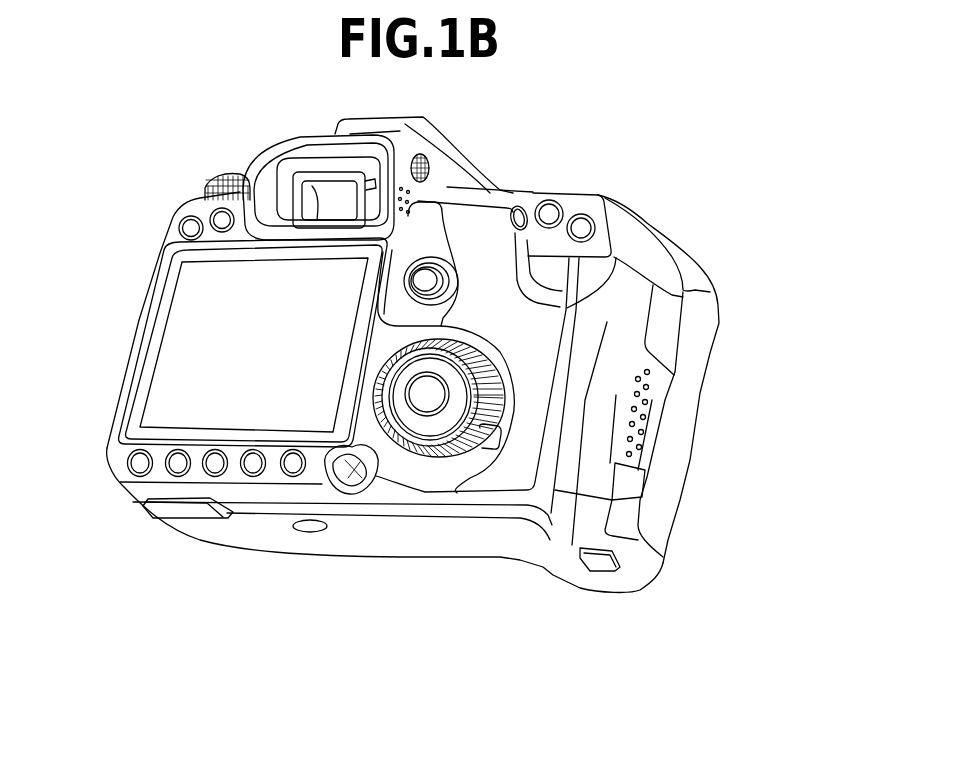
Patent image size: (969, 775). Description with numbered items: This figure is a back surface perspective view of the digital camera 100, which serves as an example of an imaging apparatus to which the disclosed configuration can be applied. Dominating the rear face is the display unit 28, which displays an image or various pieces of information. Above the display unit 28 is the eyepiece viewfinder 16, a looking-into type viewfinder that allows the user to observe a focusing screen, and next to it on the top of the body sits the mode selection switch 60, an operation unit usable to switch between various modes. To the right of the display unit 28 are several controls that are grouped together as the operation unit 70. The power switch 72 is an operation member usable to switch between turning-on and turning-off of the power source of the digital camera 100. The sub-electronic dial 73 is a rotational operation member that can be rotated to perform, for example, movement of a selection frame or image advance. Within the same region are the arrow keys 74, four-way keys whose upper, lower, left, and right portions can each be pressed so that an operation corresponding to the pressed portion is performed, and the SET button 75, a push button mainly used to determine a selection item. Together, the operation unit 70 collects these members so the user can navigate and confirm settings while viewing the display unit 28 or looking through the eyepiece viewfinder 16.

The digital camera 100 is at (688, 175).
The eyepiece viewfinder 16 is at (330, 205).
The display unit 28 is at (185, 327).
The mode selection switch 60 is at (218, 173).
The operation unit 70 is at (510, 512).
The power switch 72 is at (357, 485).
The sub-electronic dial 73 is at (413, 513).
The arrow keys 74 is at (418, 428).
The SET button 75 is at (433, 458).